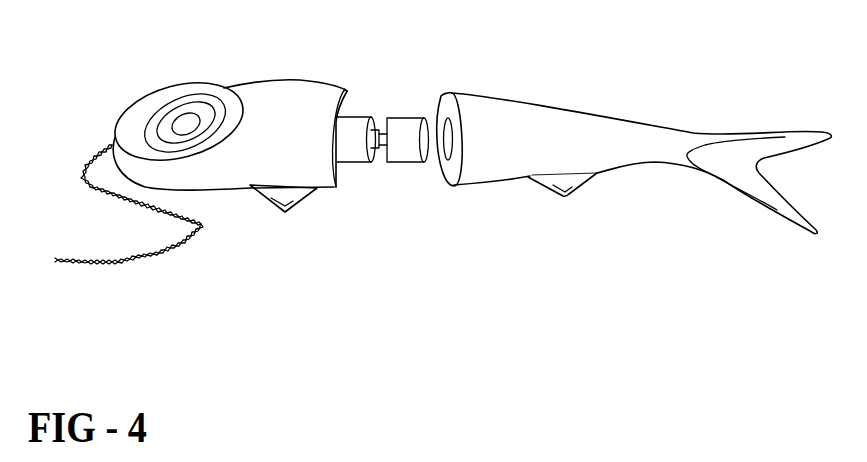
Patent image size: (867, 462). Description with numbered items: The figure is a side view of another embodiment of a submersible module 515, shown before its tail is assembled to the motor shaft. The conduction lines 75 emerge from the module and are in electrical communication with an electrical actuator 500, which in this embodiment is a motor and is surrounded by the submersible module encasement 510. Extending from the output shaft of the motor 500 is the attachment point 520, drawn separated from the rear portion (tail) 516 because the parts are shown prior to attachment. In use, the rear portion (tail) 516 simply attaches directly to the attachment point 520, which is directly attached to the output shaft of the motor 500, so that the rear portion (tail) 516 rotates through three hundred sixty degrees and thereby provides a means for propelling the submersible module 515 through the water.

The conduction lines 75 is at (137, 256).
The electrical actuator 500 is at (363, 151).
The submersible module encasement 510 is at (303, 115).
The submersible module 515 is at (572, 98).
The rear portion (tail) 516 is at (540, 158).
The attachment point 520 is at (404, 122).